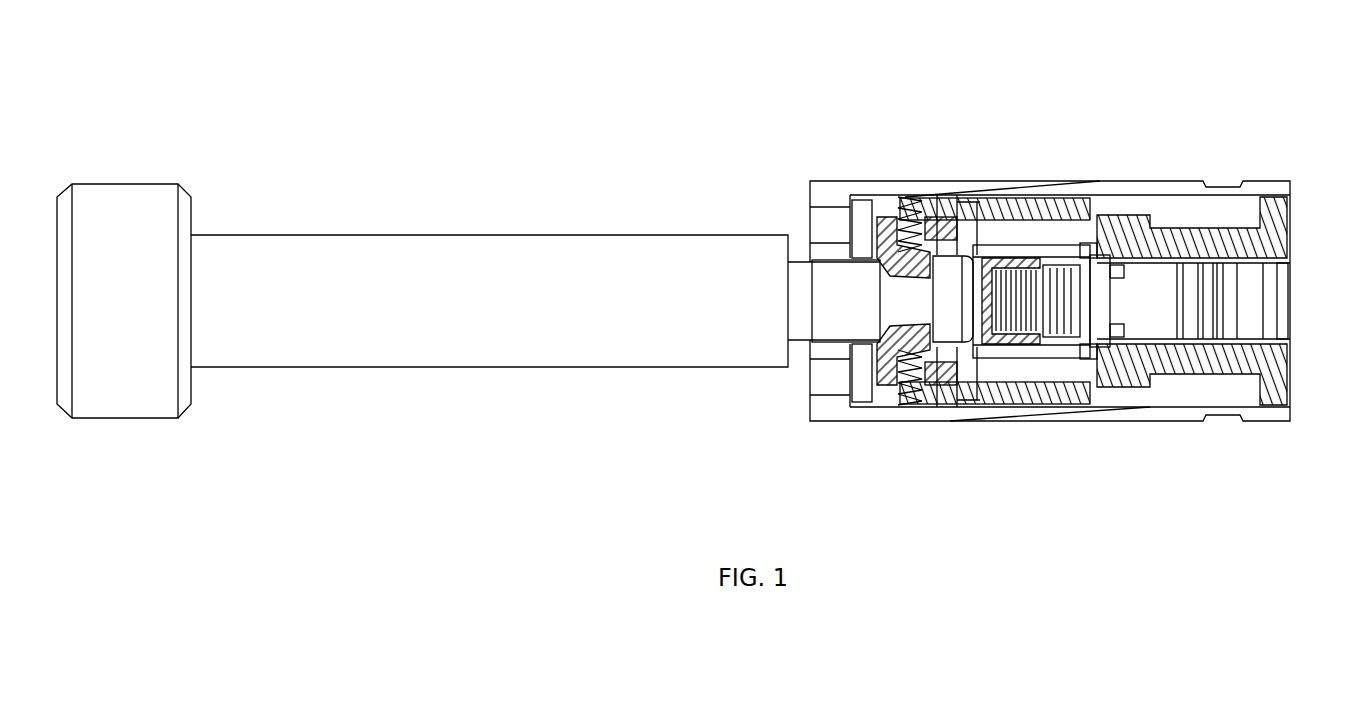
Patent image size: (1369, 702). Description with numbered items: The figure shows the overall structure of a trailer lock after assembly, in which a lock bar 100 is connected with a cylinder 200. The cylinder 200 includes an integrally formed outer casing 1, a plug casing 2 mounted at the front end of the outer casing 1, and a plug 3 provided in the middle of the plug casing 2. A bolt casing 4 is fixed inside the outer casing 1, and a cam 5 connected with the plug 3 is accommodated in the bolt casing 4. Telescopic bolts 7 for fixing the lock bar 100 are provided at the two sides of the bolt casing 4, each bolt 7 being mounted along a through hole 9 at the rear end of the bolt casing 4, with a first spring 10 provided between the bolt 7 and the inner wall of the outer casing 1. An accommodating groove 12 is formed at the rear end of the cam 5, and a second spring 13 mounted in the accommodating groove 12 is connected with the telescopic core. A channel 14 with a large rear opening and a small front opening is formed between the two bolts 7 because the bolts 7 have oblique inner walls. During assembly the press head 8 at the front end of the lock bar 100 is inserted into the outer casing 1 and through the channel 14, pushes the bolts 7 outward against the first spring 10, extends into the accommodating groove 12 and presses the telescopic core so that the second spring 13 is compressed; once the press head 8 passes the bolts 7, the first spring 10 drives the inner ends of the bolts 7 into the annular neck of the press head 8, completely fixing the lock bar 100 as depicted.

The lock bar 100 is at (462, 235).
The cylinder 200 is at (1065, 162).
The outer casing 1 is at (880, 178).
The plug casing 2 is at (1277, 223).
The plug 3 is at (1287, 270).
The bolt casing 4 is at (958, 400).
The cam 5 is at (1028, 350).
The bolt 7 is at (878, 405).
The press head 8 is at (948, 295).
The through hole 9 is at (878, 262).
The first spring 10 is at (902, 405).
The accommodating groove 12 is at (1075, 340).
The second spring 13 is at (1085, 237).
The channel 14 is at (875, 258).